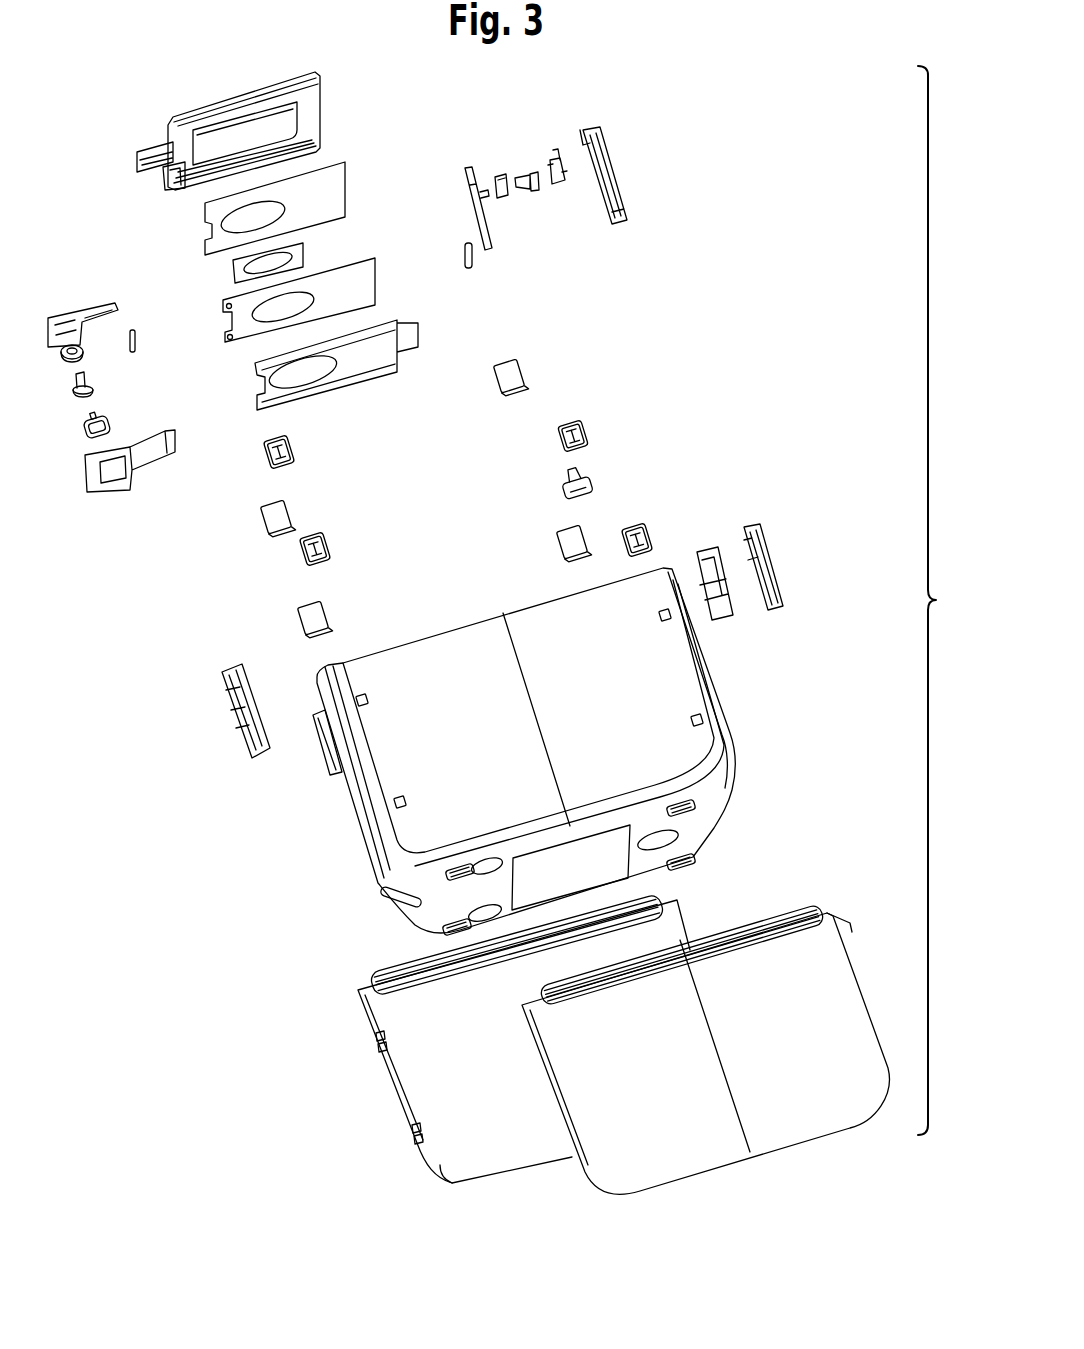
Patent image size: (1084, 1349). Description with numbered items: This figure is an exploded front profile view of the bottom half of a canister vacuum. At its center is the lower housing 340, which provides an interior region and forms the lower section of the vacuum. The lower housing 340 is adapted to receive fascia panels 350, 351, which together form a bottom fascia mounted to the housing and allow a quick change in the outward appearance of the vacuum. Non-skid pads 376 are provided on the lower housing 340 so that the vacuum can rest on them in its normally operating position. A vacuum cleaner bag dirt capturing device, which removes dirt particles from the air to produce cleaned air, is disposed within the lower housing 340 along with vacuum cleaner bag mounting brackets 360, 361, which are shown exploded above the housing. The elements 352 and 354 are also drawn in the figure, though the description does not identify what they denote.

The lower housing 340 is at (531, 752).
The fascia panel 350 is at (850, 924).
The fascia panel 351 is at (529, 1024).
The side wall 352 is at (408, 840).
The tabs 354 is at (382, 1058).
The vacuum cleaner bag mounting bracket 360 is at (316, 108).
The vacuum cleaner bag mounting bracket 361 is at (347, 188).
The non-skid pads 376 is at (695, 810).